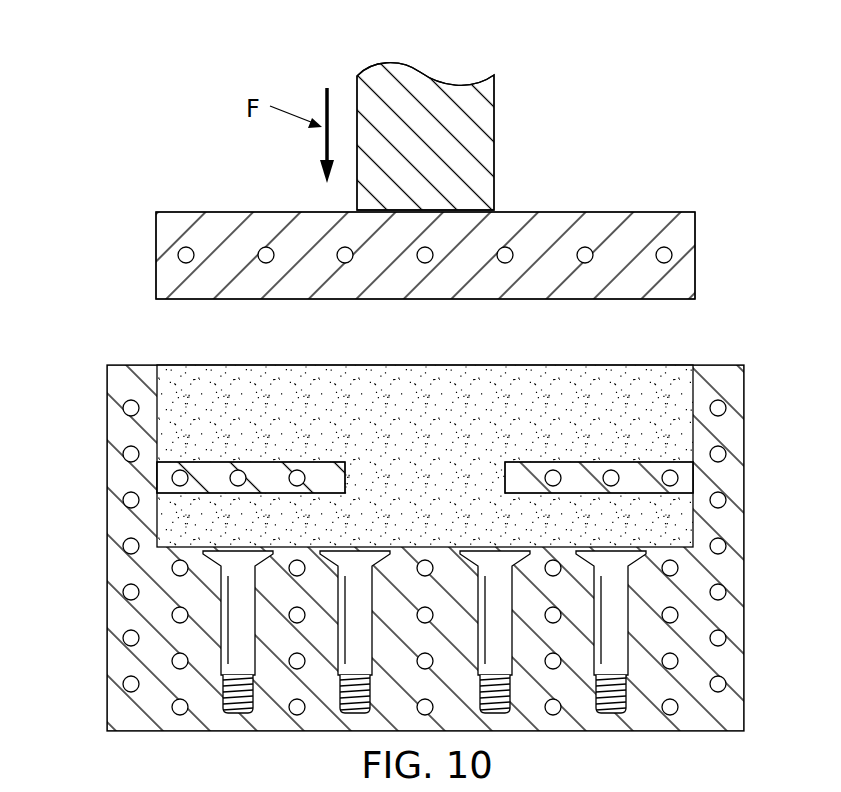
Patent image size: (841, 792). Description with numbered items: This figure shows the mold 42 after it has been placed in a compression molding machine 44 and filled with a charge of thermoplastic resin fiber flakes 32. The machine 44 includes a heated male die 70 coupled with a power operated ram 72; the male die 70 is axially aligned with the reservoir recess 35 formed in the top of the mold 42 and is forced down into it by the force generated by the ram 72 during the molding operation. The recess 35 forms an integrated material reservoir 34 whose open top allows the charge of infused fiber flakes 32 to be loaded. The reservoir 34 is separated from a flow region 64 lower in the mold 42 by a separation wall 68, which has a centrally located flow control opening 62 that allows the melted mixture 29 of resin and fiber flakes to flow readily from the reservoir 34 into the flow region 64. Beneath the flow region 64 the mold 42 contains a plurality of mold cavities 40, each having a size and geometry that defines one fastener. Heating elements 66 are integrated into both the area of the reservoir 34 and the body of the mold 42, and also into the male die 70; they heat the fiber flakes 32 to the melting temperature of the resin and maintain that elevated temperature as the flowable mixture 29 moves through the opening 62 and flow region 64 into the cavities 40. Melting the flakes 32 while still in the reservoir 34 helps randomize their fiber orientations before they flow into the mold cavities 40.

The compression molding machine 44 is at (455, 162).
The power operated ram 72 is at (494, 150).
The heated male die 70 is at (695, 232).
The heating elements 66 is at (186, 246).
The reservoir recess 35 is at (198, 390).
The flow control opening 62 is at (376, 470).
The thermoplastic infused fiber flakes 32 is at (374, 430).
The material reservoir 34 is at (425, 387).
The flowable mixture 29 is at (632, 392).
The separation wall 68 is at (202, 462).
The flow region 64 is at (188, 524).
The partable mold 42 is at (78, 610).
The mold cavities 40 is at (240, 636).